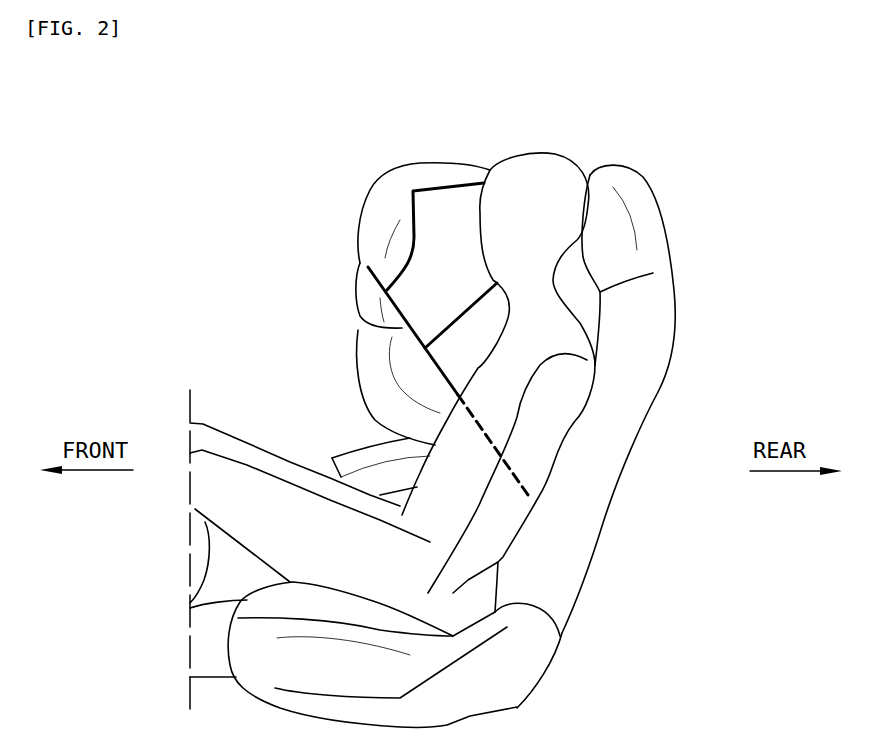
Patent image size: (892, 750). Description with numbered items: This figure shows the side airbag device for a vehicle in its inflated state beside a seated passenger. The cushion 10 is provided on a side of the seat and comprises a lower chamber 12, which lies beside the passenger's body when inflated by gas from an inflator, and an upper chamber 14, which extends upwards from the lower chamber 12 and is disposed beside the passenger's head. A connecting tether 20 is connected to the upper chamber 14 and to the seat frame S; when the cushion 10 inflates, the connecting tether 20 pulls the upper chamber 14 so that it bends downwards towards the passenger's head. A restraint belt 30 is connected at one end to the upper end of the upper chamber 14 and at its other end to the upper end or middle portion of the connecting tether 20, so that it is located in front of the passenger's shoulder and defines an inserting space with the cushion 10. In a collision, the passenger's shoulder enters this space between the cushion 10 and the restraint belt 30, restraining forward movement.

The cushion 10 is at (405, 278).
The lower chamber 12 is at (380, 377).
The upper chamber 14 is at (383, 208).
The connecting tether 20 is at (482, 443).
The restraint belt 30 is at (443, 217).
The seat frame S is at (660, 350).